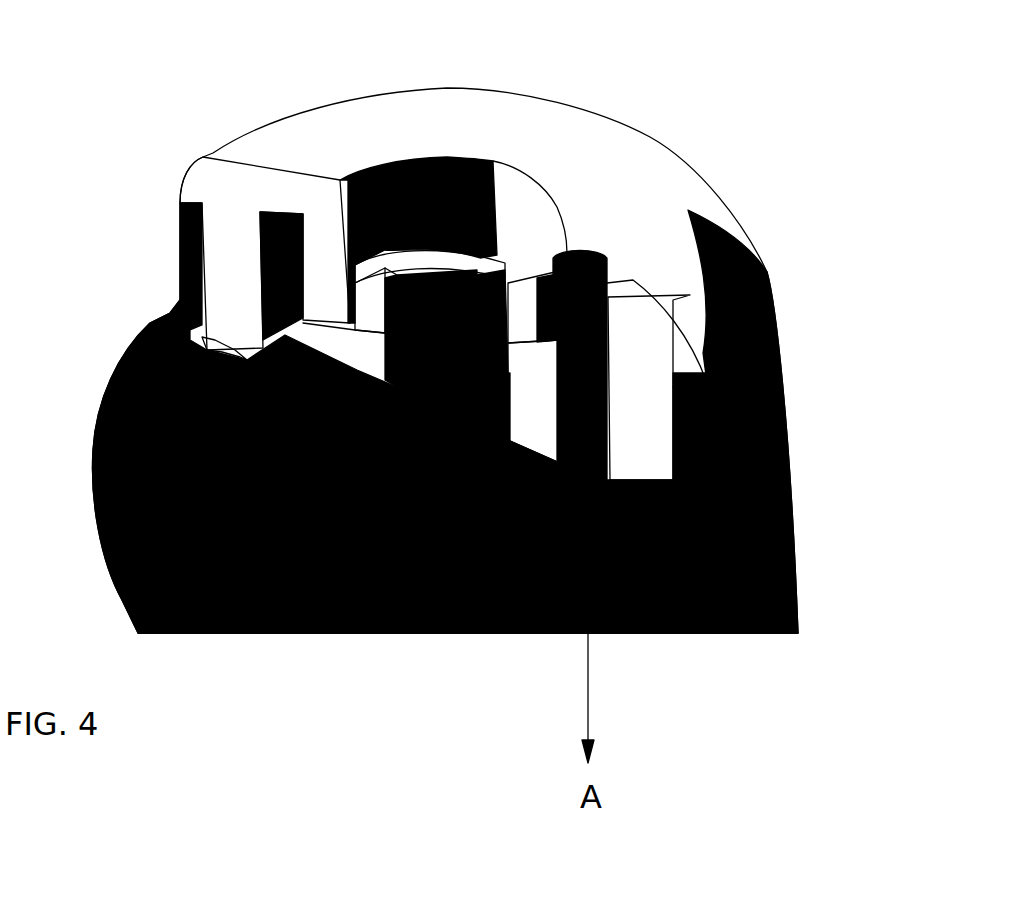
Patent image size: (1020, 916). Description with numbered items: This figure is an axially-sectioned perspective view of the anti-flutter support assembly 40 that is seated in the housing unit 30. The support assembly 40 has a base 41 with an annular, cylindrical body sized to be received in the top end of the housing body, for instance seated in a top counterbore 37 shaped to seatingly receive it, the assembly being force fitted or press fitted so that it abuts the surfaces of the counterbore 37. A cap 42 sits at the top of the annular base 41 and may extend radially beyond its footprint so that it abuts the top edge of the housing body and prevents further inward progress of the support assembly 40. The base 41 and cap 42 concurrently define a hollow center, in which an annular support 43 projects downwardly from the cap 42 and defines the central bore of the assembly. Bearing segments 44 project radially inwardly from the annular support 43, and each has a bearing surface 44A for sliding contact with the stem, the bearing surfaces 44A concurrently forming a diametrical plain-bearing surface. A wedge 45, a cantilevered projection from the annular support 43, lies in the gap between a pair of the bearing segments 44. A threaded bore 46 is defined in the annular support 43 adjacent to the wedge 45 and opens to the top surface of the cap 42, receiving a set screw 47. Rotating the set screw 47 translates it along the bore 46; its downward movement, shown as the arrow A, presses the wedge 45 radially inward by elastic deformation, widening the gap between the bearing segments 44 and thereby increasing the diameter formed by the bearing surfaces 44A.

The housing unit 30 is at (222, 620).
The top counterbore 37 is at (203, 340).
The anti-flutter support assembly 40 is at (170, 132).
The base 41 is at (653, 423).
The cap 42 is at (680, 250).
The annular support 43 is at (328, 240).
The bearing segments 44 is at (435, 260).
The bearing surface 44A is at (507, 313).
The wedge 45 is at (470, 420).
The bore 46 is at (607, 460).
The set screw 47 is at (583, 380).